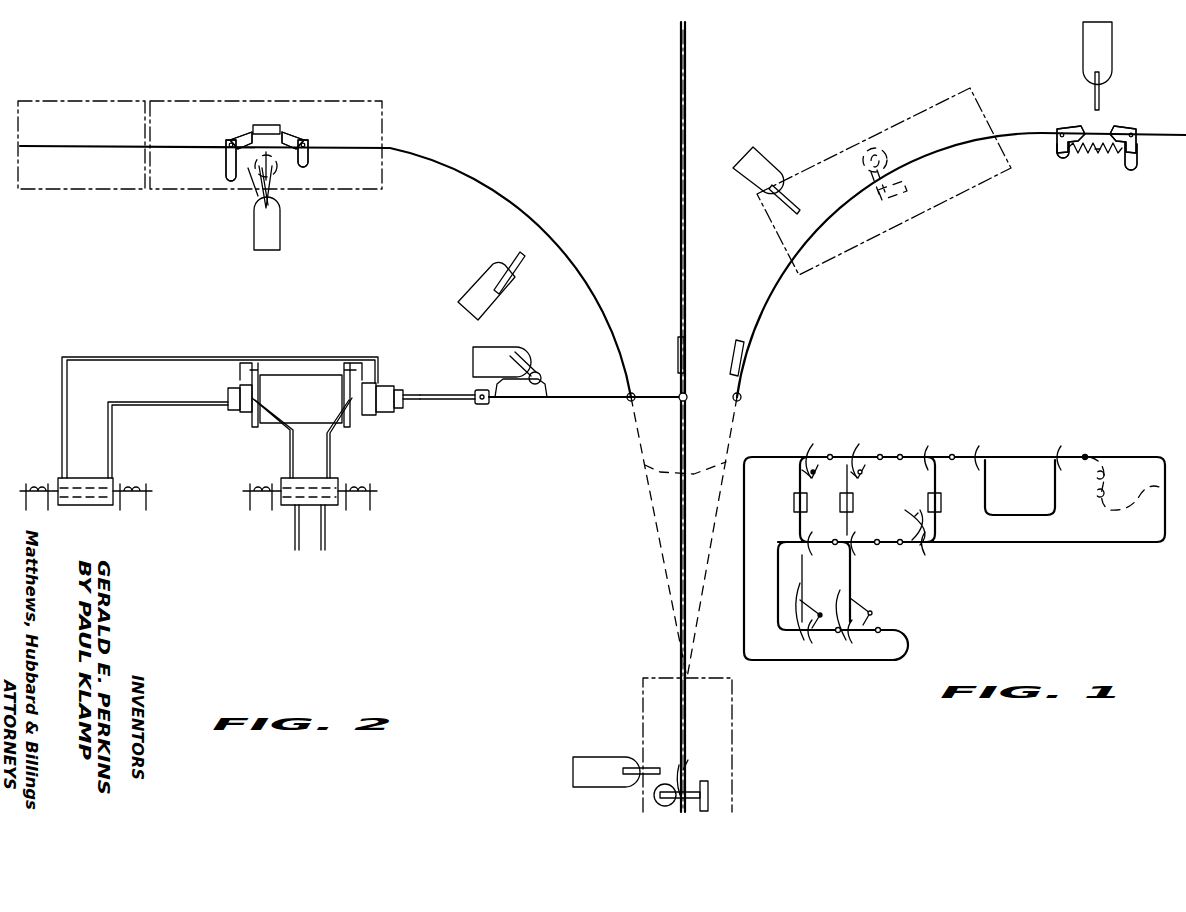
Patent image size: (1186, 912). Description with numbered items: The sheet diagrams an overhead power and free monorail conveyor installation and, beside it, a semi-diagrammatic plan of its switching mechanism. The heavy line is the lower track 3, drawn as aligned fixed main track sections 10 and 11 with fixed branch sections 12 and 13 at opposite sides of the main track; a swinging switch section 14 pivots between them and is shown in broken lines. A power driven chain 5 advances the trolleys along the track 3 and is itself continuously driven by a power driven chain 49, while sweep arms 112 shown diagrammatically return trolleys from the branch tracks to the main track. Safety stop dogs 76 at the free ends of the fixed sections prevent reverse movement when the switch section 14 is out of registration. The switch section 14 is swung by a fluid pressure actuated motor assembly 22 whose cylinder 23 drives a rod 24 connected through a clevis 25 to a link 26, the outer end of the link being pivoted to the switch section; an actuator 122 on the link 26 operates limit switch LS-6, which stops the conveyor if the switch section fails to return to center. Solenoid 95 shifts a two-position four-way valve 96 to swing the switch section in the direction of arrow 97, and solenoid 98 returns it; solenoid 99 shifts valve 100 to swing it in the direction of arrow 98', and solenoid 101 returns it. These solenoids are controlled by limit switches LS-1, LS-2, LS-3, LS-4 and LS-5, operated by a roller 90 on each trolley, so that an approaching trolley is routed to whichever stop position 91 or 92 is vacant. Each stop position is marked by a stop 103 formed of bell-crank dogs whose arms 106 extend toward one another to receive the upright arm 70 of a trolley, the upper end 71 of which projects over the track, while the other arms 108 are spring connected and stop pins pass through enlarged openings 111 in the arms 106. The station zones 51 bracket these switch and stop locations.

In FIG. 1, the lower track 3 is at (1105, 557).
In FIG. 1, the power driven chain 5 is at (688, 277).
In FIG. 1, the main track section 10 is at (680, 192).
In FIG. 1, the main track section 11 is at (690, 756).
In FIG. 2, the fixed branch section 12 is at (500, 200).
In FIG. 1, the fixed branch section 12 is at (800, 578).
In FIG. 1, the fixed branch section 13 is at (762, 332).
In FIG. 1, the swinging switch section 14 is at (684, 447).
In FIG. 2, the fluid pressure actuated motor assembly 22 is at (301, 399).
In FIG. 2, the cylinder 23 is at (298, 380).
In FIG. 2, the rod 24 is at (450, 401).
In FIG. 2, the clevis 25 is at (479, 405).
In FIG. 2, the link 26 is at (604, 400).
In FIG. 1, the power driven chain 49 is at (1098, 480).
In FIG. 2, the station zone 51 is at (78, 118).
In FIG. 1, the station zone 51 is at (642, 709).
In FIG. 2, the arm 70 is at (258, 125).
In FIG. 1, the arm 70 is at (710, 796).
In FIG. 2, the upper end of arm 71 is at (274, 153).
In FIG. 1, the upper end of arm 71 is at (683, 784).
In FIG. 1, the safety stop dogs 76 is at (735, 365).
In FIG. 2, the roller 90 is at (282, 200).
In FIG. 1, the roller 90 is at (653, 796).
In FIG. 2, the stop position 91 is at (250, 195).
In FIG. 1, the stop position 92 is at (1110, 155).
In FIG. 2, the solenoid 95 is at (252, 485).
In FIG. 2, the two-position four-way valve 96 is at (310, 480).
In FIG. 1, the arrow 97 is at (748, 423).
In FIG. 2, the solenoid 98 is at (362, 483).
In FIG. 2, the arrow 98' is at (574, 494).
In FIG. 2, the solenoid 99 is at (40, 489).
In FIG. 2, the valve 100 is at (90, 506).
In FIG. 2, the solenoid 101 is at (134, 485).
In FIG. 2, the stop 103 is at (312, 134).
In FIG. 1, the stop 103 is at (1125, 122).
In FIG. 2, the arms 106 is at (238, 138).
In FIG. 1, the arms 106 is at (1075, 127).
In FIG. 2, the arms 108 is at (226, 160).
In FIG. 1, the arms 108 is at (1060, 156).
In FIG. 1, the enlarged openings 111 is at (1090, 151).
In FIG. 1, the sweep arms 112 is at (809, 478).
In FIG. 2, the actuator 122 is at (540, 392).
In FIG. 1, the limit switch LS-1 is at (608, 743).
In FIG. 1, the limit switch LS-2 is at (1103, 76).
In FIG. 1, the limit switch LS-3 is at (770, 172).
In FIG. 2, the limit switch LS-4 is at (268, 241).
In FIG. 2, the limit switch LS-5 is at (486, 278).
In FIG. 2, the limit switch LS-6 is at (506, 352).